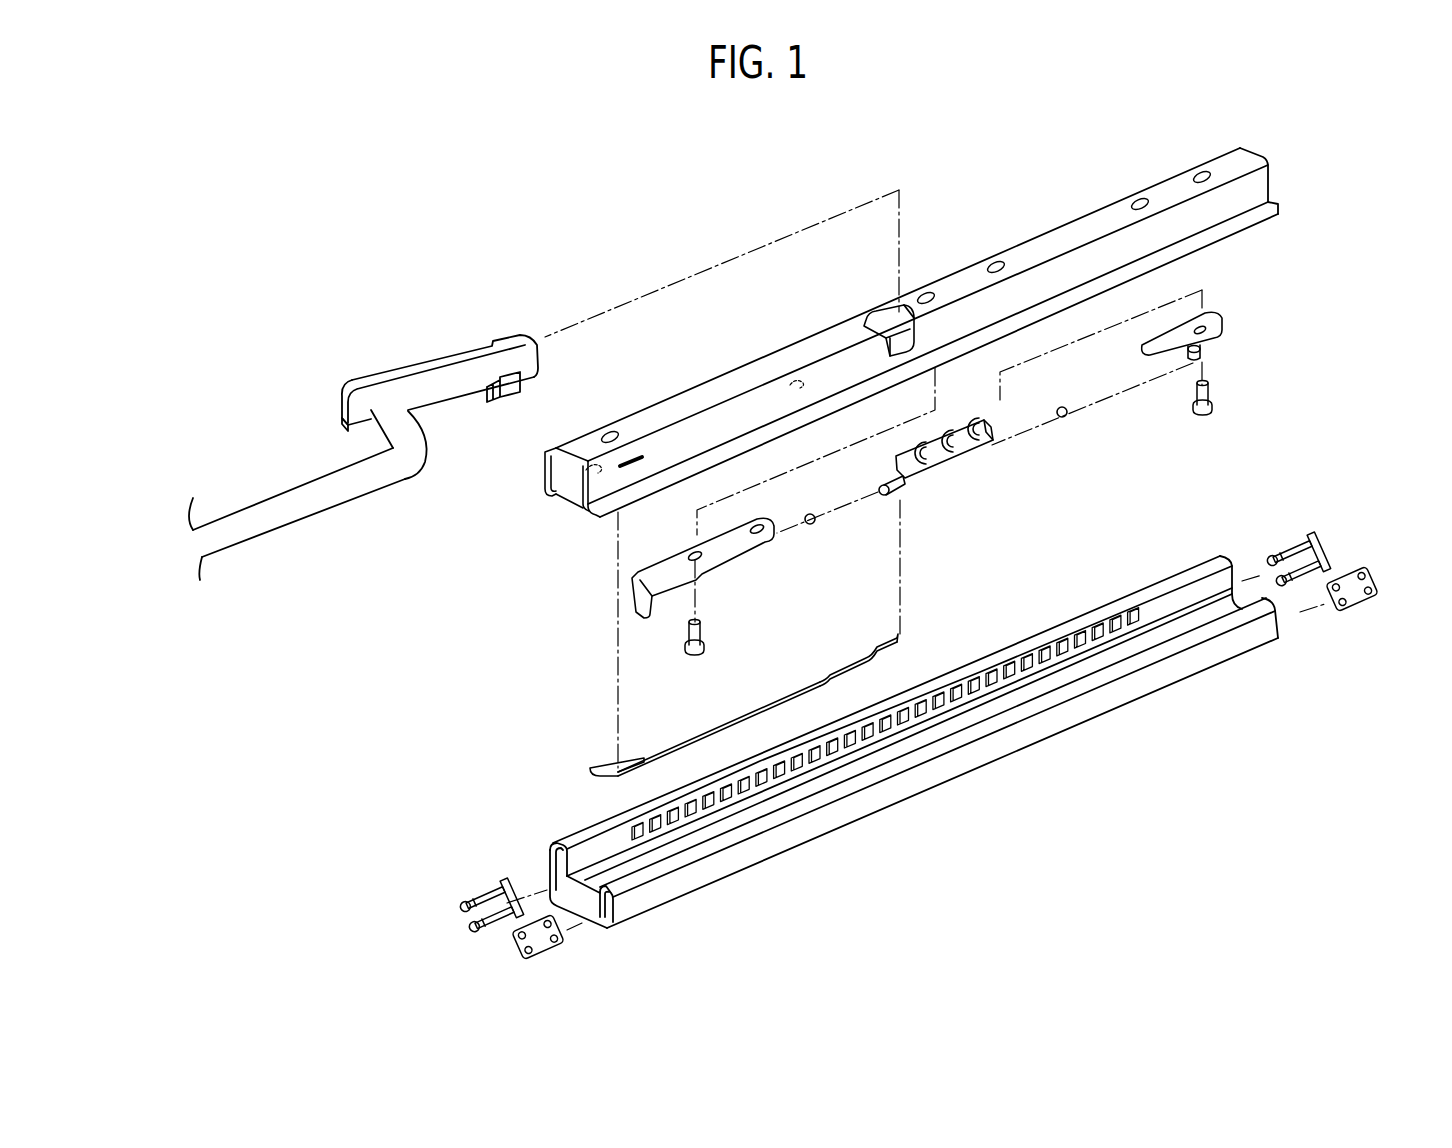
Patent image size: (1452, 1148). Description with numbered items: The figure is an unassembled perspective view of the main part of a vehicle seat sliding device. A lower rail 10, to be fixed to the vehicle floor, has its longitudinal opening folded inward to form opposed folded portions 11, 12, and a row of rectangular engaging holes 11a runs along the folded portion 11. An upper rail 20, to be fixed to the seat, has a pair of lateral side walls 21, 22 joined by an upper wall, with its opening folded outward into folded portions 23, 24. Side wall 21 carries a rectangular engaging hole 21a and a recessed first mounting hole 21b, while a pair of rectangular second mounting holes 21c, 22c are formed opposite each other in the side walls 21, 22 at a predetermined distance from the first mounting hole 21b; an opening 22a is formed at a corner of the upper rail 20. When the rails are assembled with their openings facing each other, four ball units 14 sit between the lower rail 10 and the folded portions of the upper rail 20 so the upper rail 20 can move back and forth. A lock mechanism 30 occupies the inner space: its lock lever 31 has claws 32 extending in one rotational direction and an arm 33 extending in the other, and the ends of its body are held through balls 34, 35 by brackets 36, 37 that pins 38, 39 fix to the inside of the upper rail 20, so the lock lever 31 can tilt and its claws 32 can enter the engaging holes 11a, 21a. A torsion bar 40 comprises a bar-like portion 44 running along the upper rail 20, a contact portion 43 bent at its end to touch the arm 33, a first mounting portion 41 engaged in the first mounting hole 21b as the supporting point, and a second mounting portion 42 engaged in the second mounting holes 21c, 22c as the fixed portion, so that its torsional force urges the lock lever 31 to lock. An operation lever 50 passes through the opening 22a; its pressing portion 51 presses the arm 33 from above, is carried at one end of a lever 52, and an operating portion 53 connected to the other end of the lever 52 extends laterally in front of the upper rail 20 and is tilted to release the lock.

The lower rail 10 is at (890, 756).
The folded portion 11 is at (562, 866).
The rectangular engaging holes 11a is at (1143, 605).
The folded portion 12 is at (597, 905).
The ball units 14 is at (1286, 547).
The upper rail 20 is at (928, 343).
The side wall 21 is at (560, 468).
The rectangular engaging hole 21a is at (884, 330).
The first mounting hole 21b is at (798, 375).
The second mounting hole 21c is at (592, 455).
The side wall 22 is at (1258, 190).
The opening 22a is at (908, 318).
The second mounting hole 22c is at (650, 455).
The folded portion 23 is at (547, 448).
The folded portion 24 is at (1275, 214).
The lock mechanism 30 is at (955, 470).
The lock lever 31 is at (973, 452).
The claws 32 is at (932, 440).
The arm 33 is at (910, 490).
The ball 34 is at (815, 524).
The ball 35 is at (1067, 417).
The bracket 36 is at (738, 533).
The bracket 37 is at (1226, 323).
The pin 38 is at (700, 627).
The pin 39 is at (1212, 400).
The torsion bar 40 is at (705, 681).
The first mounting portion 41 is at (823, 672).
The second mounting portion 42 is at (582, 763).
The contact portion 43 is at (898, 632).
The bar-like portion 44 is at (756, 695).
The operation lever 50 is at (363, 443).
The pressing portion 51 is at (515, 400).
The lever 52 is at (427, 367).
The operating portion 53 is at (283, 498).